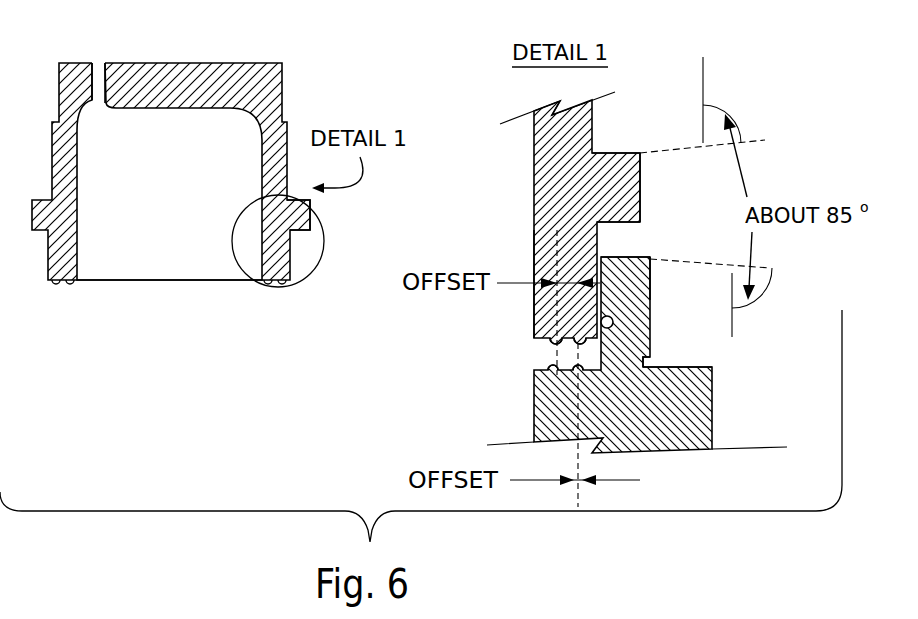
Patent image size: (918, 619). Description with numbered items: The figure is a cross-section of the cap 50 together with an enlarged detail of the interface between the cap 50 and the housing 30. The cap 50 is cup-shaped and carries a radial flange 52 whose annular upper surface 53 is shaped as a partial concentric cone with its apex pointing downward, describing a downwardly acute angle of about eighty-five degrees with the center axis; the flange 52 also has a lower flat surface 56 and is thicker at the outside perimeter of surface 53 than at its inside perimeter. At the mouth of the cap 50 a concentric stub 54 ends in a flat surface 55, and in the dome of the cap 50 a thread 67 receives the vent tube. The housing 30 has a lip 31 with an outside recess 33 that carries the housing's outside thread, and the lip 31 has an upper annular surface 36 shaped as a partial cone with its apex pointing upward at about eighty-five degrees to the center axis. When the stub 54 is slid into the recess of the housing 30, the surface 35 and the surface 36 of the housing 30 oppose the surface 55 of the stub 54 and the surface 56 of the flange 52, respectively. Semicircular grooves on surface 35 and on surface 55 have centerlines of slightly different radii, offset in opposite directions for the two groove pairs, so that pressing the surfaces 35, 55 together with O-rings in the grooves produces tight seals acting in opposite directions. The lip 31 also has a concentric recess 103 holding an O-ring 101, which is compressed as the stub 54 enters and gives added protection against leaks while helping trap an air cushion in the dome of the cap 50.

The housing 30 is at (707, 432).
The lip 31 is at (645, 334).
The outside recess 33 is at (657, 367).
The surface 35 is at (540, 367).
The upper annular surface 36 is at (622, 256).
The cap 50 is at (190, 200).
The radial flange 52 is at (318, 209).
The annular upper surface 53 is at (618, 152).
The concentric stub 54 is at (540, 312).
The flat surface 55 is at (56, 286).
The lower flat surface 56 is at (623, 225).
The thread 67 is at (100, 98).
The O-ring 101 is at (614, 320).
The concentric recess 103 is at (648, 296).